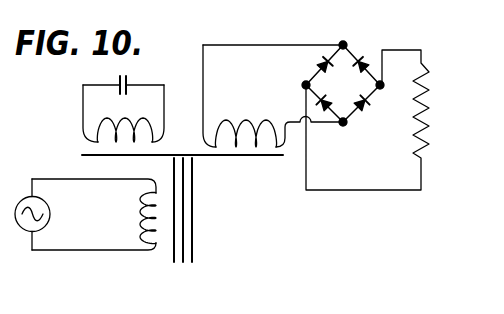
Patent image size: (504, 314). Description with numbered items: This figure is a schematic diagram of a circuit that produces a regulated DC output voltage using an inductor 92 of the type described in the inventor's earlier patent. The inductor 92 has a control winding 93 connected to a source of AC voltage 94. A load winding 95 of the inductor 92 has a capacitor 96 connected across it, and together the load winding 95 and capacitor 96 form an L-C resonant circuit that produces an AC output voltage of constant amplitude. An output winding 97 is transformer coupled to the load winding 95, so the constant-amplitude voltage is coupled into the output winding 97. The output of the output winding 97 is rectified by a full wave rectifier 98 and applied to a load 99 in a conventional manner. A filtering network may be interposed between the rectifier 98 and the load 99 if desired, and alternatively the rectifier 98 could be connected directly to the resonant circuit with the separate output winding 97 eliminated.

The inductor 92 is at (212, 173).
The control winding 93 is at (136, 224).
The source of AC voltage 94 is at (30, 233).
The load winding 95 is at (97, 134).
The capacitor 96 is at (130, 80).
The output winding 97 is at (244, 118).
The full wave rectifier 98 is at (345, 76).
The load 99 is at (430, 90).